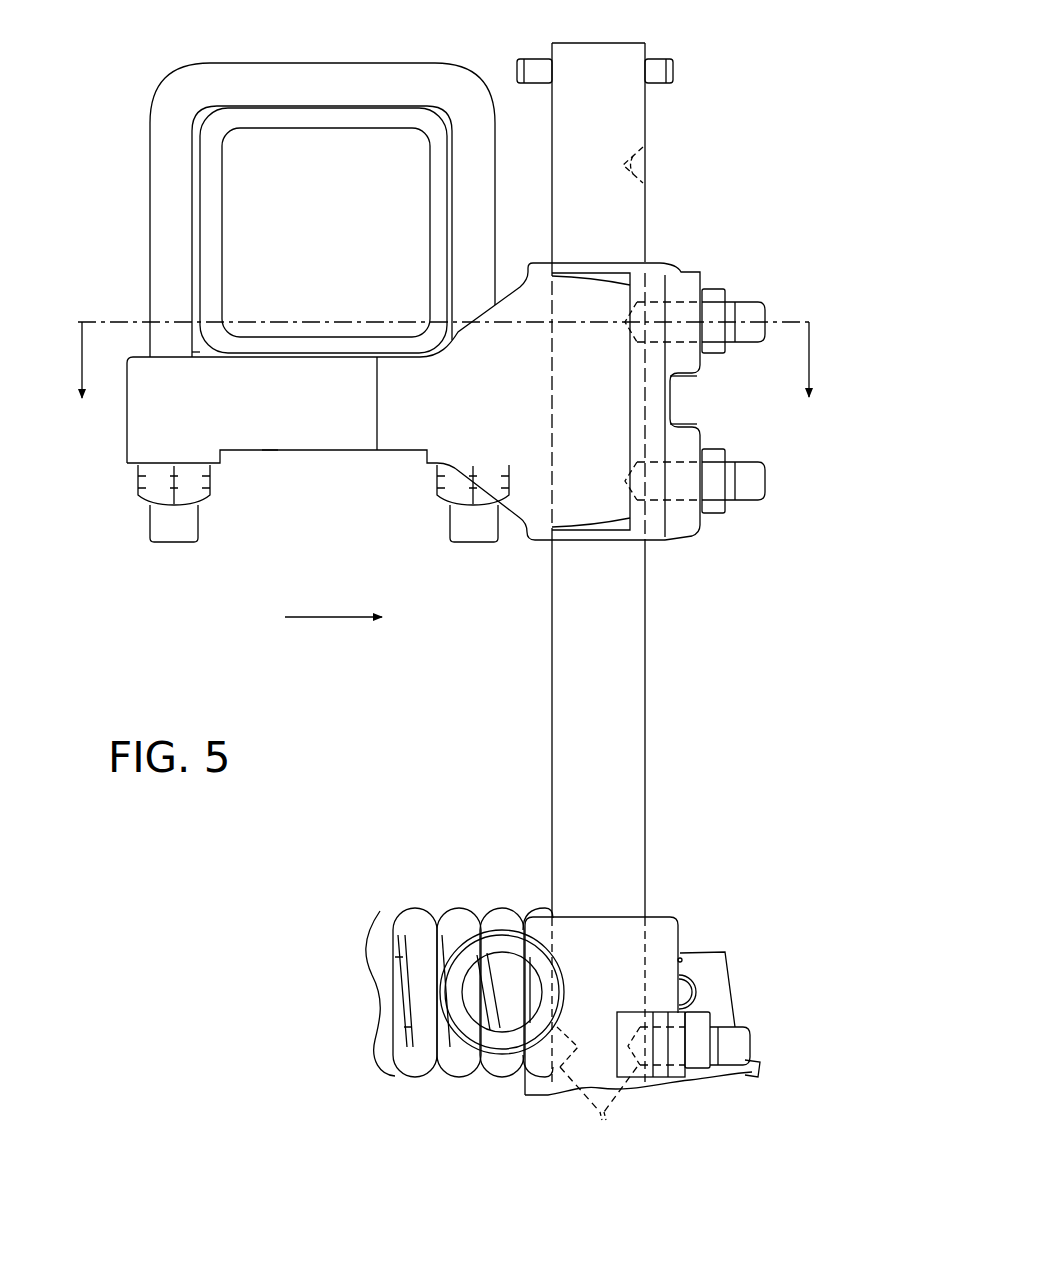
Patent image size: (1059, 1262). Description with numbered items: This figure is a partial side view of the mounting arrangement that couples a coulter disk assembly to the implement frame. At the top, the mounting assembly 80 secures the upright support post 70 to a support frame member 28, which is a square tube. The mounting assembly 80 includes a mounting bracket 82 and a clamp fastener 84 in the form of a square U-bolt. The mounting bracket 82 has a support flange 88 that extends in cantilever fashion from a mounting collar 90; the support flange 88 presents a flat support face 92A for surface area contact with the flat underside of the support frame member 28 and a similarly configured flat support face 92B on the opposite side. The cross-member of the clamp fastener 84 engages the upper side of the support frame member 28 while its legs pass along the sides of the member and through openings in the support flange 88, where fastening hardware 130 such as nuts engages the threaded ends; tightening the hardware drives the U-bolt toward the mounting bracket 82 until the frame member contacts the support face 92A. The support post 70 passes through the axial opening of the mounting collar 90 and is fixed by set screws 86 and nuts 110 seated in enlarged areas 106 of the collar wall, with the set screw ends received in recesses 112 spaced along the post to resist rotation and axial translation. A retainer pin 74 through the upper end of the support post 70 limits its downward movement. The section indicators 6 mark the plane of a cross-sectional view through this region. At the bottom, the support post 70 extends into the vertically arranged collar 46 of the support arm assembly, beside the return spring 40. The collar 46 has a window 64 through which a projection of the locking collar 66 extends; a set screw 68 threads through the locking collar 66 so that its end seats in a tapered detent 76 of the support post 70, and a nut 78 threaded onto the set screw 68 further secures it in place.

The section line 6- 6 is at (444, 377).
The support frame member 28 is at (330, 117).
The return spring 40 is at (387, 970).
The collar 46 is at (665, 930).
The window 64 is at (632, 1007).
The locking collar 66 is at (627, 1033).
The set screw 68 is at (740, 1027).
The support post 70 is at (628, 775).
The retainer pin 74 is at (657, 70).
The detent 76 is at (597, 1091).
The nut 78 is at (693, 1073).
The mounting assembly 80 is at (490, 615).
The mounting bracket 82 is at (393, 452).
The clamp fastener 84 is at (320, 64).
The set screws 86 is at (753, 312).
The support flange 88 is at (148, 427).
The mounting collar 90 is at (667, 260).
The flat support face 92A is at (200, 352).
The flat support face 92B is at (270, 452).
The enlarged areas 106 is at (685, 362).
The nuts 110 is at (708, 292).
The recesses 112 is at (640, 163).
The fastening hardware 130 is at (145, 490).